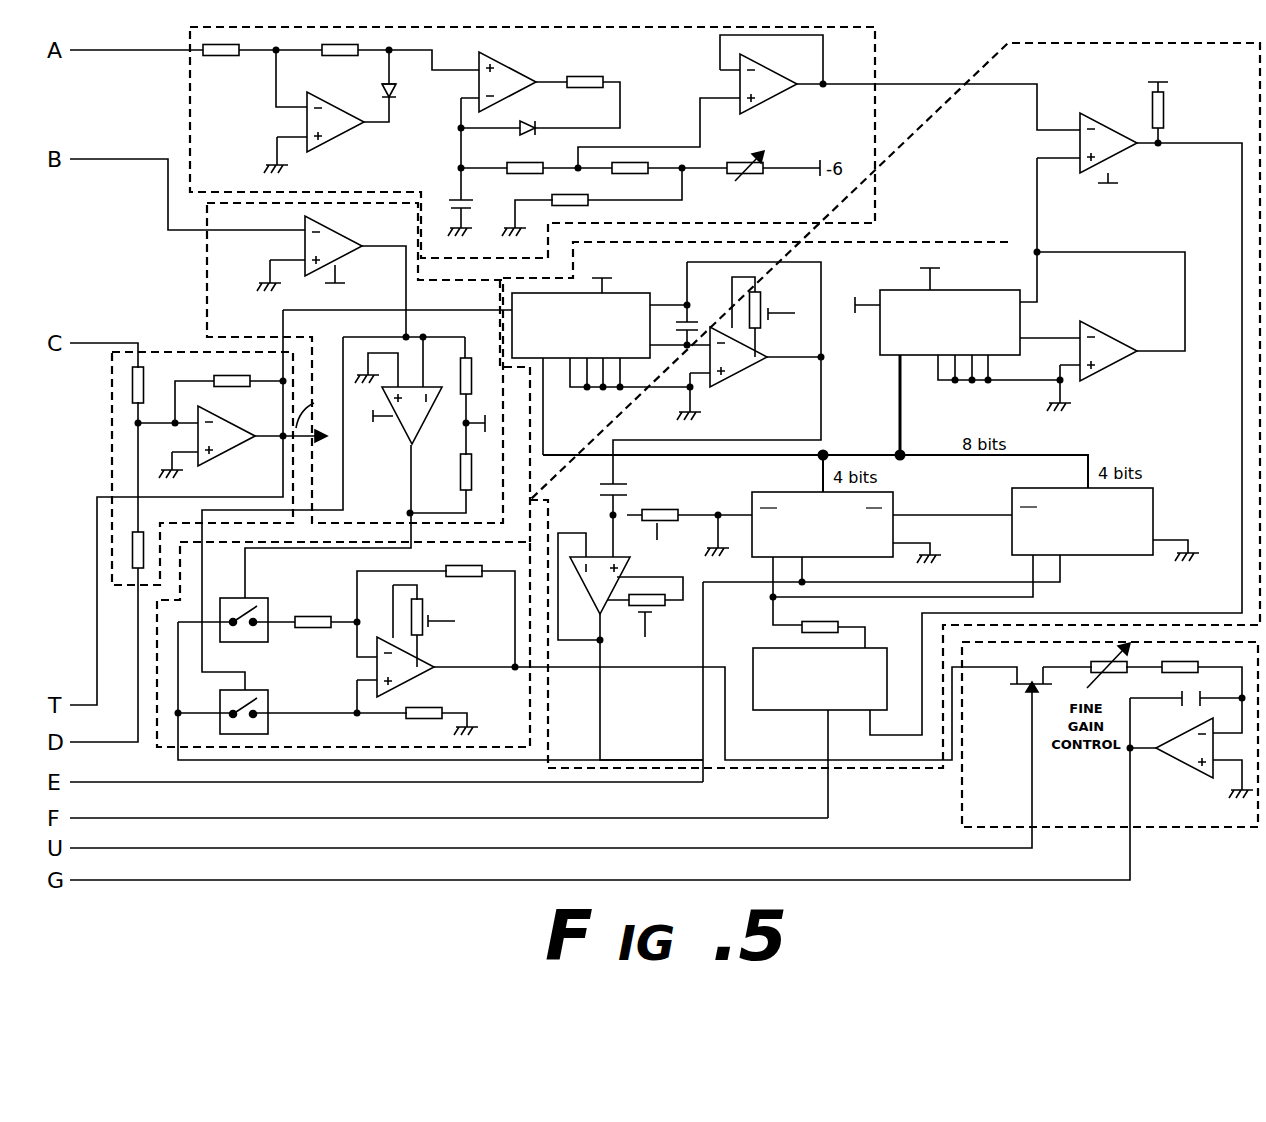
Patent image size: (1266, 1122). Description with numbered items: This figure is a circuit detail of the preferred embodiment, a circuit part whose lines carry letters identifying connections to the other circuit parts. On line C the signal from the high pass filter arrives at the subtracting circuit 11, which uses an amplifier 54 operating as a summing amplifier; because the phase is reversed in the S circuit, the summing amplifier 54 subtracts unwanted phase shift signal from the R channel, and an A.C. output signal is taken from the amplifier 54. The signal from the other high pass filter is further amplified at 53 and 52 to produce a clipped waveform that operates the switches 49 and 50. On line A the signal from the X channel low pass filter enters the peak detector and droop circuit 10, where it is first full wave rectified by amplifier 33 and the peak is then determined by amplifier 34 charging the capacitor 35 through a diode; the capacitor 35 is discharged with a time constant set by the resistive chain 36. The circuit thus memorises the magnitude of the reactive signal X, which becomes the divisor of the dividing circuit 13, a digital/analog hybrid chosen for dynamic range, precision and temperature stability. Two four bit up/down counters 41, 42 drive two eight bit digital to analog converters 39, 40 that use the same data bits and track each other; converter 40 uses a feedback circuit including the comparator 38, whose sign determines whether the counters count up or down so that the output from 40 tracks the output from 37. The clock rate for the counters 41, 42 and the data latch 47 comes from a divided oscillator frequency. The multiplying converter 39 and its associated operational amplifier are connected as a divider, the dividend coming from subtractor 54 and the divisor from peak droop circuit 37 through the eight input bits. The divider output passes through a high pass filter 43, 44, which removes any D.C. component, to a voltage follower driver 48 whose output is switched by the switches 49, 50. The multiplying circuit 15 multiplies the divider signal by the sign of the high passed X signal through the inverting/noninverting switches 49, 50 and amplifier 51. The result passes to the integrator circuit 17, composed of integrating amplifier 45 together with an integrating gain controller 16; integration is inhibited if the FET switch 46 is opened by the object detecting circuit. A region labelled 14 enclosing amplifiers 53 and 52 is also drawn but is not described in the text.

The peak detector and droop circuit 10 is at (232, 182).
The subtracting circuit 11 is at (178, 342).
The dividing circuit 13 is at (1000, 168).
The multiplier circuit 14 is at (196, 268).
The multiplying circuit 15 is at (520, 720).
The integrating gain controller 16 is at (1135, 652).
The integrator circuit 17 is at (950, 812).
The amplifier 33 is at (333, 127).
The amplifier 34 is at (500, 84).
The capacitor 35 is at (450, 188).
The resistive chain 36 is at (690, 178).
The peak droop circuit output amplifier 37 is at (766, 88).
The comparator 38 is at (1107, 140).
The multiplying digital to analog converter 39 is at (620, 300).
The digital to analog converter 40 is at (965, 302).
The up/down counter 41 is at (893, 497).
The up/down counter 42 is at (1132, 502).
The high pass filter capacitor 43 is at (633, 490).
The high pass filter resistor 44 is at (681, 543).
The integrating amplifier 45 is at (1193, 750).
The FET switch 46 is at (1020, 695).
The data latch 47 is at (777, 667).
The voltage follower driver 48 is at (600, 590).
The switch 49 is at (262, 703).
The switch 50 is at (262, 610).
The amplifier 51 is at (407, 668).
The amplifier 52 is at (410, 418).
The amplifier 53 is at (322, 246).
The summing amplifier 54 is at (213, 435).